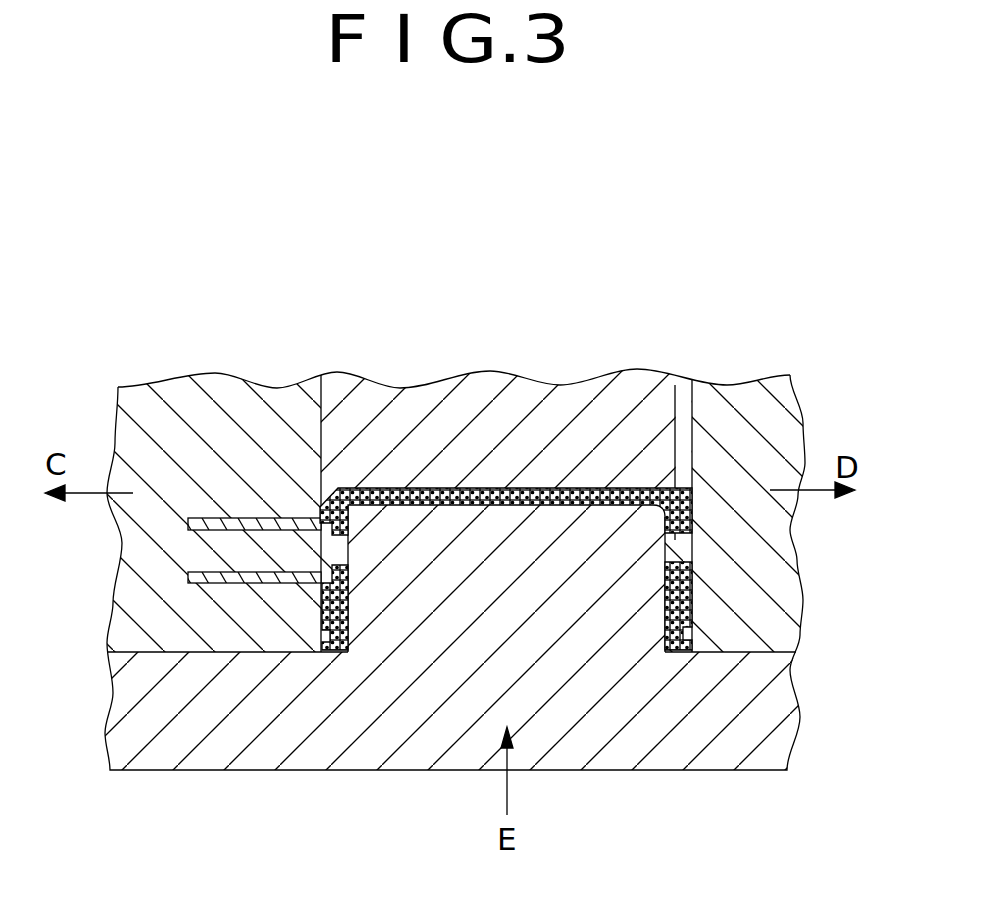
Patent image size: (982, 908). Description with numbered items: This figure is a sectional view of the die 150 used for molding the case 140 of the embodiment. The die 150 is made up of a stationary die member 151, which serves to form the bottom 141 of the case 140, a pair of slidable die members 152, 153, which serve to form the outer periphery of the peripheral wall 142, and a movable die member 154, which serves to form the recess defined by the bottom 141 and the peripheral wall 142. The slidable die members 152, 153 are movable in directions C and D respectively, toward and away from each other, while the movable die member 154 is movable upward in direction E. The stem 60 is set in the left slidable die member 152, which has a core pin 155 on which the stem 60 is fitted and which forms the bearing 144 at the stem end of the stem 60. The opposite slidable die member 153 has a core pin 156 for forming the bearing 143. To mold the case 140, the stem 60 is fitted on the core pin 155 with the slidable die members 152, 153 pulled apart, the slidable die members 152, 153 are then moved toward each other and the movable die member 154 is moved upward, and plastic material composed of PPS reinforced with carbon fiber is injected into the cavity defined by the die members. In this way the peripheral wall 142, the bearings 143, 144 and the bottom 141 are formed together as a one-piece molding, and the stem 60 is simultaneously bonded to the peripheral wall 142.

The case 140 is at (677, 635).
The bottom 141 is at (486, 492).
The peripheral wall 142 is at (330, 613).
The bearing 143 is at (690, 562).
The bearing 144 is at (332, 565).
The die 150 is at (409, 362).
The stationary die member 151 is at (575, 405).
The left slidable die member 152 is at (167, 405).
The slidable die member 153 is at (755, 403).
The movable die member 154 is at (422, 737).
The core pin 155 is at (270, 538).
The core pin 156 is at (676, 400).
The stem 60 is at (190, 572).